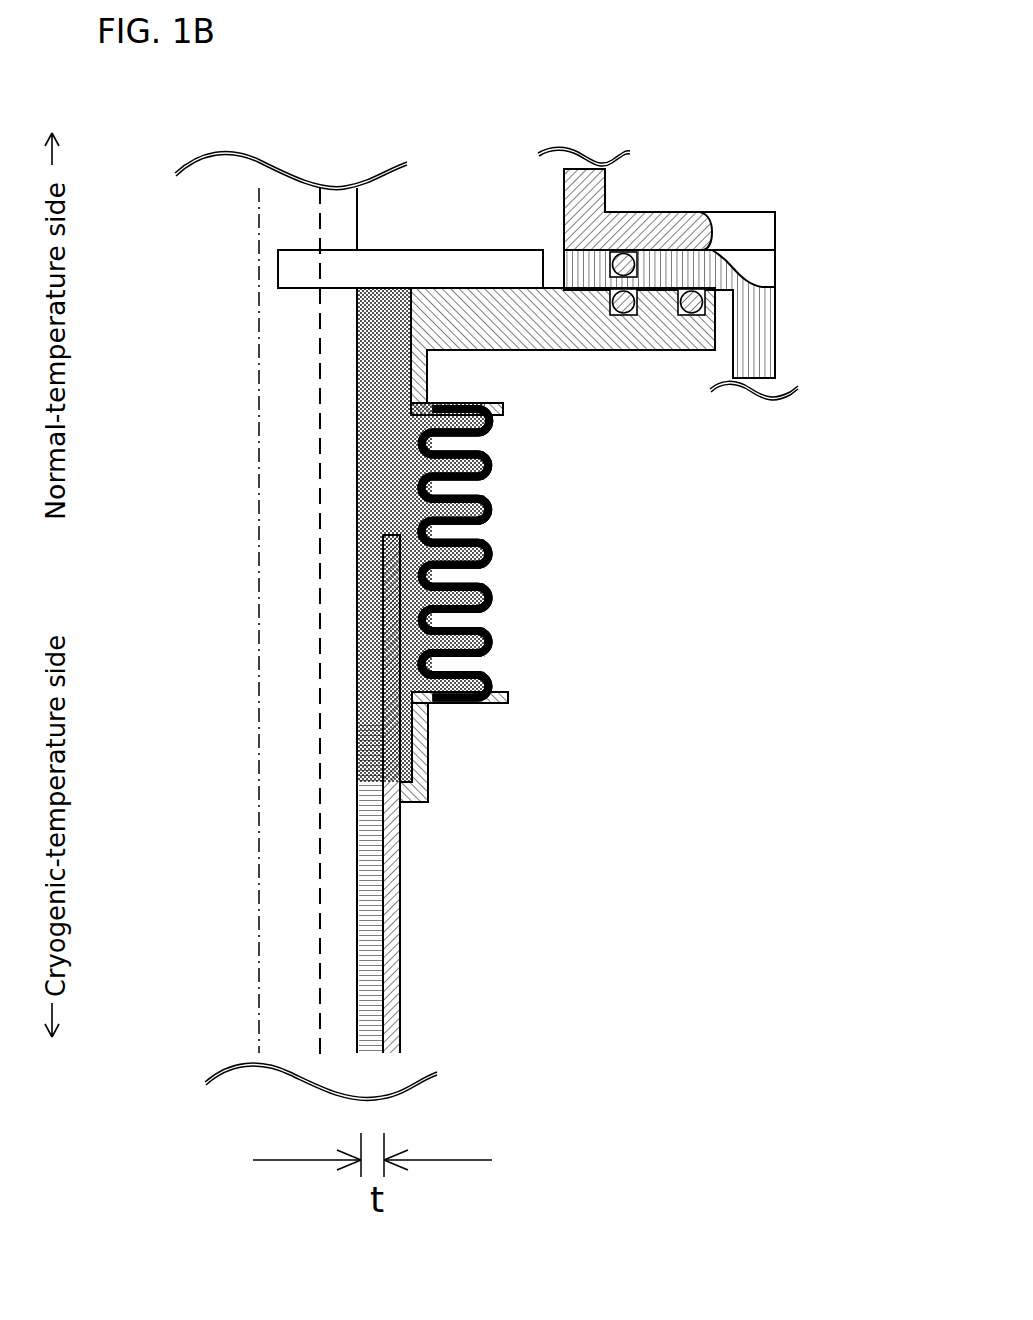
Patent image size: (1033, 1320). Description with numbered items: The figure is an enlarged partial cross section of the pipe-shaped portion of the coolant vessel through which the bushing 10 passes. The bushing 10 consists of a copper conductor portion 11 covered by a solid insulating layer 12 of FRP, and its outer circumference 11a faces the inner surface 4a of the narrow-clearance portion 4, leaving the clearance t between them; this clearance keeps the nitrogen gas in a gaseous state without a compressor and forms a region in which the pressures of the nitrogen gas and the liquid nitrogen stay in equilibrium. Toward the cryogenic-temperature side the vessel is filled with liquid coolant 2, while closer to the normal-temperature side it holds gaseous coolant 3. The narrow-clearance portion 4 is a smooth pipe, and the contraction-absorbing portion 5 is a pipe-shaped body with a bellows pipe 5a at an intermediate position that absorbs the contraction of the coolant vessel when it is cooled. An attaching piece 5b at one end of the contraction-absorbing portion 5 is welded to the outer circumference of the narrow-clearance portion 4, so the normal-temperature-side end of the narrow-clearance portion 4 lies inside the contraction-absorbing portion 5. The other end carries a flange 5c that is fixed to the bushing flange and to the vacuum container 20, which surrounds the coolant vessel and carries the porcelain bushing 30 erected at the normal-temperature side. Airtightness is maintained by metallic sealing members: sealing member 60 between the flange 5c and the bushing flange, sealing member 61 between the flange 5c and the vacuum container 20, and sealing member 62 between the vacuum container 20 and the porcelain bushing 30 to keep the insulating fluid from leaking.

The bushing 10 is at (357, 232).
The conductor portion 11 is at (325, 1023).
The outer circumference 11a is at (353, 414).
The solid insulating layer 12 is at (446, 250).
The liquid coolant 2 is at (422, 749).
The gaseous coolant 3 is at (488, 496).
The narrow-clearance portion 4 is at (456, 794).
The inner surface 4a is at (387, 962).
The contraction-absorbing portion 5 is at (516, 625).
The bellows pipe 5a is at (490, 548).
The attaching piece 5b is at (413, 804).
The flange 5c is at (617, 351).
The vacuum container 20 is at (777, 324).
The porcelain bushing 30 is at (758, 212).
The sealing member 60 is at (527, 350).
The sealing member 61 is at (695, 297).
The sealing member 62 is at (634, 262).